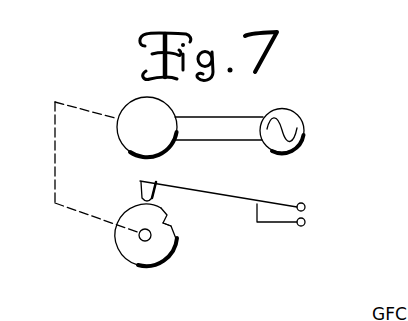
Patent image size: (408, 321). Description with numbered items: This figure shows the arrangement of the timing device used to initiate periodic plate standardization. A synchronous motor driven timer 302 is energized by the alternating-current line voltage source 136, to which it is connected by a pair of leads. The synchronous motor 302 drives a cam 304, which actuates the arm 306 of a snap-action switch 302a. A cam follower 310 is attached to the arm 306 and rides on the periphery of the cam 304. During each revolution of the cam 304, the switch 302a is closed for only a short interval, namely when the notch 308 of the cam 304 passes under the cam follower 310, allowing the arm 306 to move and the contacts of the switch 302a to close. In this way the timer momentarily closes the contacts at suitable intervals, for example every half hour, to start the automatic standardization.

The synchronous motor driven timer 302 is at (117, 102).
The line voltage source 136 is at (299, 116).
The arm 306 is at (213, 193).
The snap-action switch 302a is at (262, 204).
The cam follower 310 is at (140, 191).
The cam 304 is at (165, 261).
The notch 308 is at (166, 225).